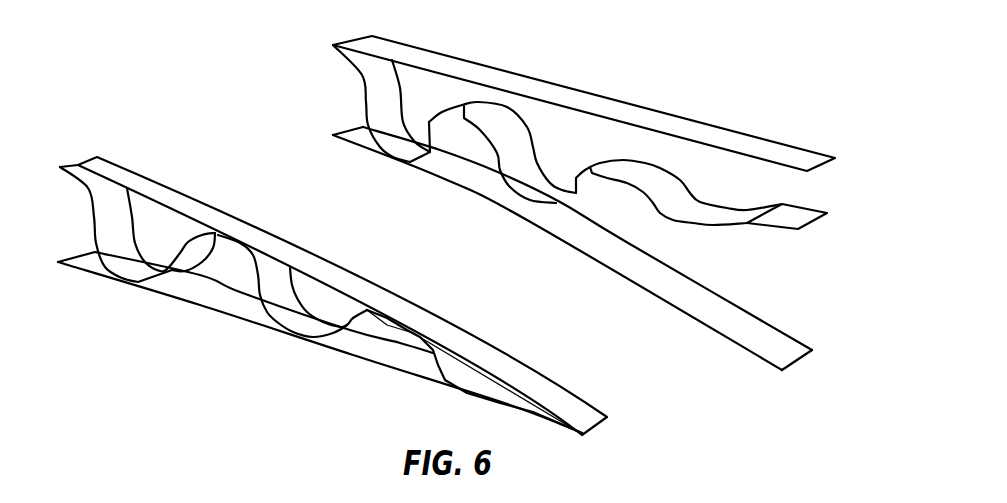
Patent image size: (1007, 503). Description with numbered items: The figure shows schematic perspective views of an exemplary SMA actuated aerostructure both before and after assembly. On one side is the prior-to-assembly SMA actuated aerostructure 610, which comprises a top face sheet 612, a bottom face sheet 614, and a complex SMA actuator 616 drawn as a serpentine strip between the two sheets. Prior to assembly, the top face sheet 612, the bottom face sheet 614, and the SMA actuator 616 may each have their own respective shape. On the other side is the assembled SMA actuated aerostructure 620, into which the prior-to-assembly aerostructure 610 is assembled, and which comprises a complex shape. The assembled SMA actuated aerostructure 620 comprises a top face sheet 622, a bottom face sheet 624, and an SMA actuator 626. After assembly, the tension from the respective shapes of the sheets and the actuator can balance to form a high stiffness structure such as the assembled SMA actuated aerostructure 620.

The prior-to-assembly SMA actuated aerostructure 610 is at (547, 52).
The top face sheet 612 is at (658, 117).
The bottom face sheet 614 is at (787, 343).
The complex SMA actuator 616 is at (720, 227).
The assembled SMA actuated aerostructure 620 is at (196, 155).
The top face sheet 622 is at (350, 280).
The bottom face sheet 624 is at (375, 365).
The SMA actuator 626 is at (114, 229).